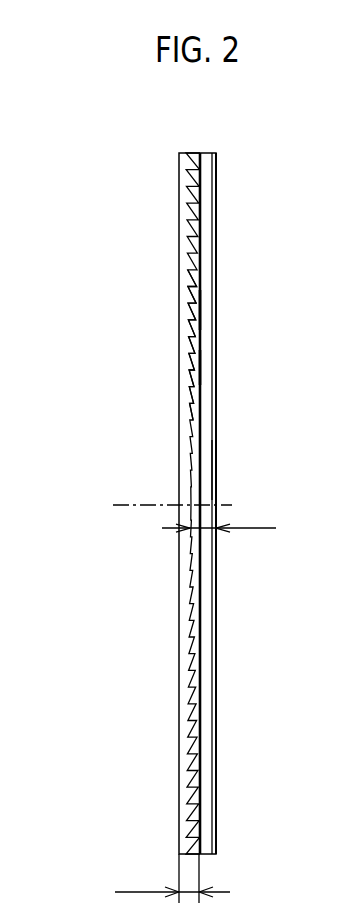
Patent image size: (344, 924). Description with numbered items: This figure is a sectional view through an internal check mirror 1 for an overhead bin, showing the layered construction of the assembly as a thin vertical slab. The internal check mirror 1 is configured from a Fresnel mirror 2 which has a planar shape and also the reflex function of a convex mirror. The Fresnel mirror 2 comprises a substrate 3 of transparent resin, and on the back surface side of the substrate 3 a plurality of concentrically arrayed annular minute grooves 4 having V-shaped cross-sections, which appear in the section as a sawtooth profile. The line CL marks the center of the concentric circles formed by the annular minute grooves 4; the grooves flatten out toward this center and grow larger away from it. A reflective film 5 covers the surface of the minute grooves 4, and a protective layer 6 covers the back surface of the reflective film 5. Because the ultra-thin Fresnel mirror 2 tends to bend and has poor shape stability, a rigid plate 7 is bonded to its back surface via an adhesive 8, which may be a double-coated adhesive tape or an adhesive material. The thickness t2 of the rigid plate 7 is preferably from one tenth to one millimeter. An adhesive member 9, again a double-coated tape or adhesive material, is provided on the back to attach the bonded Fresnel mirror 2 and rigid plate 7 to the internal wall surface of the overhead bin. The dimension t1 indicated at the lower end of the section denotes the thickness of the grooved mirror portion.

The internal check mirror 1 is at (112, 218).
The Fresnel mirror 2 is at (201, 220).
The substrate 3 is at (186, 284).
The annular minute grooves 4 is at (191, 348).
The reflective film 5 is at (202, 268).
The protective layer 6 is at (202, 311).
The rigid plate 7 is at (204, 401).
The adhesive 8 is at (201, 367).
The adhesive member 9 is at (215, 468).
The center CL is at (127, 505).
The end thickness t1 is at (172, 878).
The thickness of the rigid plate t2 is at (219, 515).